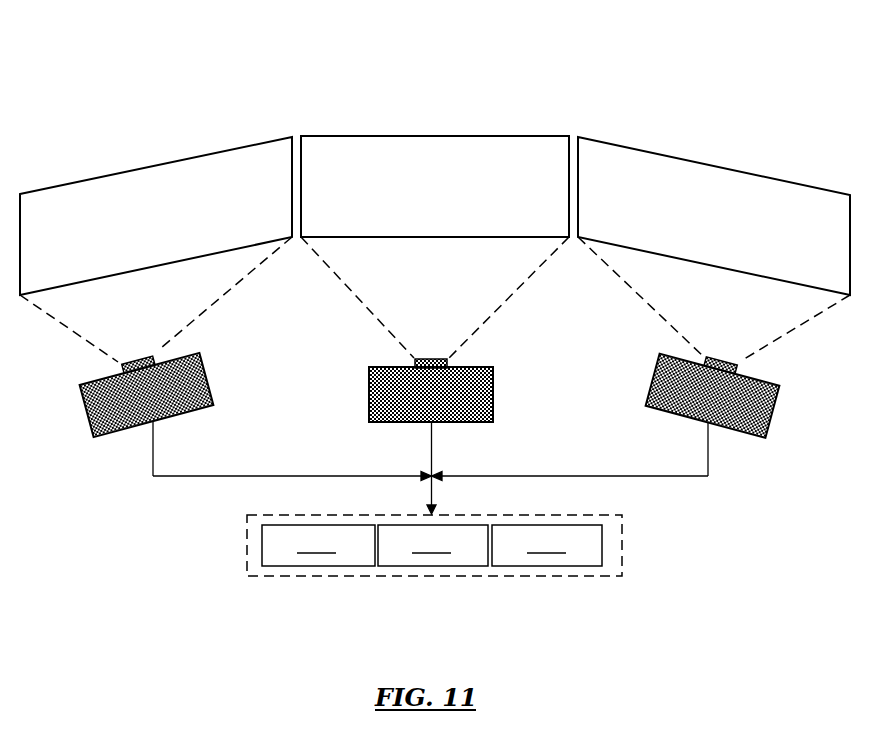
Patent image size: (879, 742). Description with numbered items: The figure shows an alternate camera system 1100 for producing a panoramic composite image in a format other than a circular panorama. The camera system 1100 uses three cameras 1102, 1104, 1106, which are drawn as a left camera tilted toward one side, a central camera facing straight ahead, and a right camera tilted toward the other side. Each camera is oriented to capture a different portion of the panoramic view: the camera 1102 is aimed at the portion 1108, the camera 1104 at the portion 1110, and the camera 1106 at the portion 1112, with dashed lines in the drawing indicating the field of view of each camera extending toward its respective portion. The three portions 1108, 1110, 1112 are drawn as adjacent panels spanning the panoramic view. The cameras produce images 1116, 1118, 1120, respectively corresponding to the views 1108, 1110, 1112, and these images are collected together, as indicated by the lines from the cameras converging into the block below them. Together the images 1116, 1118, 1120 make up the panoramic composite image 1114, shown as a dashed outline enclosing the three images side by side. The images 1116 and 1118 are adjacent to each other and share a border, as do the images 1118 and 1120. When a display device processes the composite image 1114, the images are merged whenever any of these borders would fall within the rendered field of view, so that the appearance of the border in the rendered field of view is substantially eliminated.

The camera system 1100 is at (82, 32).
The camera 1102 is at (128, 431).
The camera 1104 is at (413, 423).
The camera 1106 is at (695, 421).
The portion of panoramic view 1108 is at (158, 229).
The portion of panoramic view 1110 is at (451, 198).
The portion of panoramic view 1112 is at (736, 227).
The panoramic composite image 1114 is at (285, 577).
The image 1116 is at (304, 567).
The image 1118 is at (416, 567).
The image 1120 is at (532, 567).